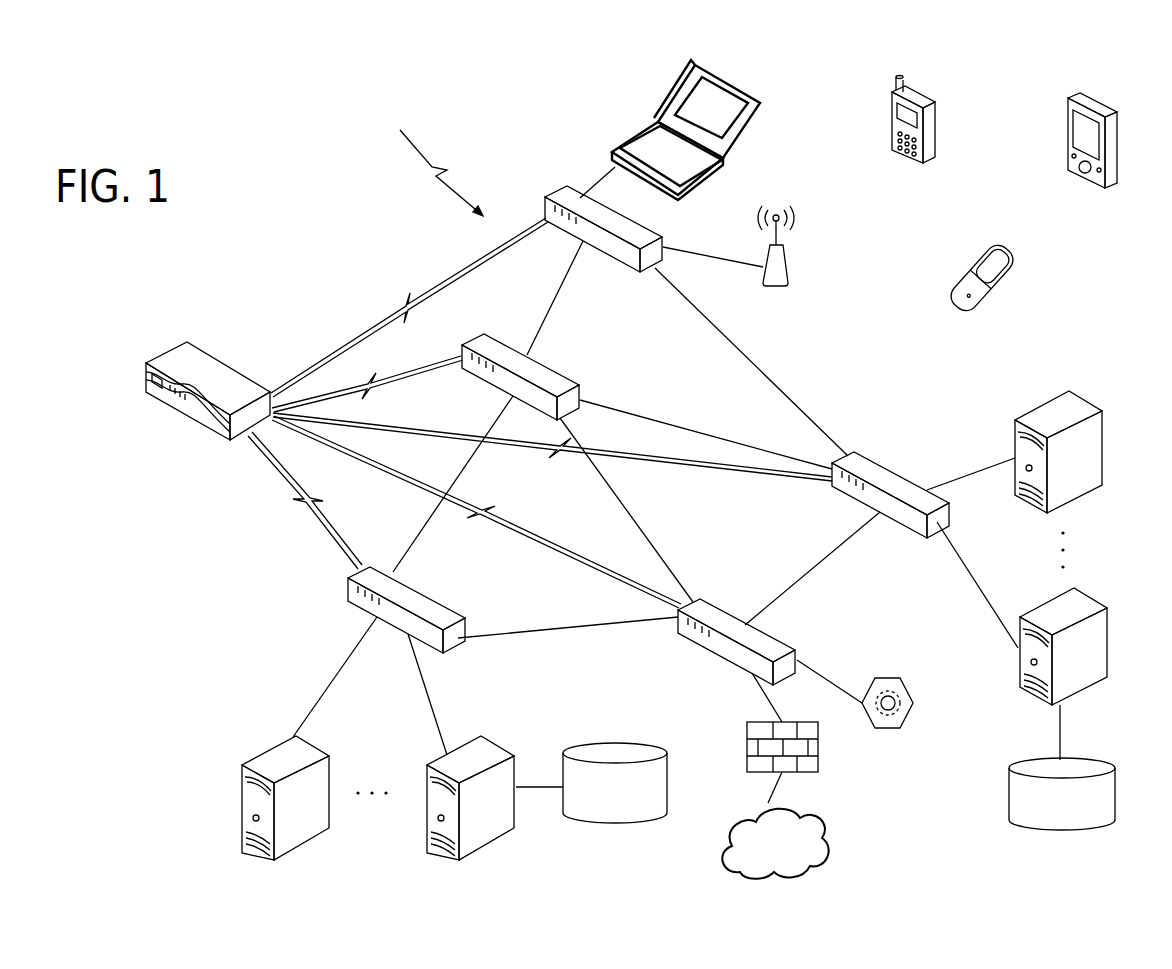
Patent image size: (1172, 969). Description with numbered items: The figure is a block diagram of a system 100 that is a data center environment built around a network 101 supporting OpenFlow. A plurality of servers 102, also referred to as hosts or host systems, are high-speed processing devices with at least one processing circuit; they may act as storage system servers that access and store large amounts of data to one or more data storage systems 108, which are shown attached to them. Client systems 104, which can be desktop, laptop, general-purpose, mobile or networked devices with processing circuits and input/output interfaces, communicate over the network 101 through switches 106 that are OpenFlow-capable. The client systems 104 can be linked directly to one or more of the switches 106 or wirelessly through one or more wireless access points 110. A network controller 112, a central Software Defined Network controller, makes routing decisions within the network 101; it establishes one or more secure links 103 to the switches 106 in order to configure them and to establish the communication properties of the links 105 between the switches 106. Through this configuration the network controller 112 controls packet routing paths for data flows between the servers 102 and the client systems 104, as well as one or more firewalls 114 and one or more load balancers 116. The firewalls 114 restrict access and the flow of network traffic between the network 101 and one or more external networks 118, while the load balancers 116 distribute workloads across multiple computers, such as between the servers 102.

The system 100 is at (275, 100).
The network 101 is at (426, 159).
The servers 102 is at (1085, 396).
The secure links 103 is at (405, 302).
The client systems 104 is at (738, 80).
The links 105 is at (572, 272).
The switches 106 is at (653, 223).
The data storage systems 108 is at (637, 808).
The wireless access points 110 is at (787, 257).
The network controller 112 is at (207, 350).
The firewalls 114 is at (745, 724).
The load balancers 116 is at (893, 678).
The external networks 118 is at (792, 856).